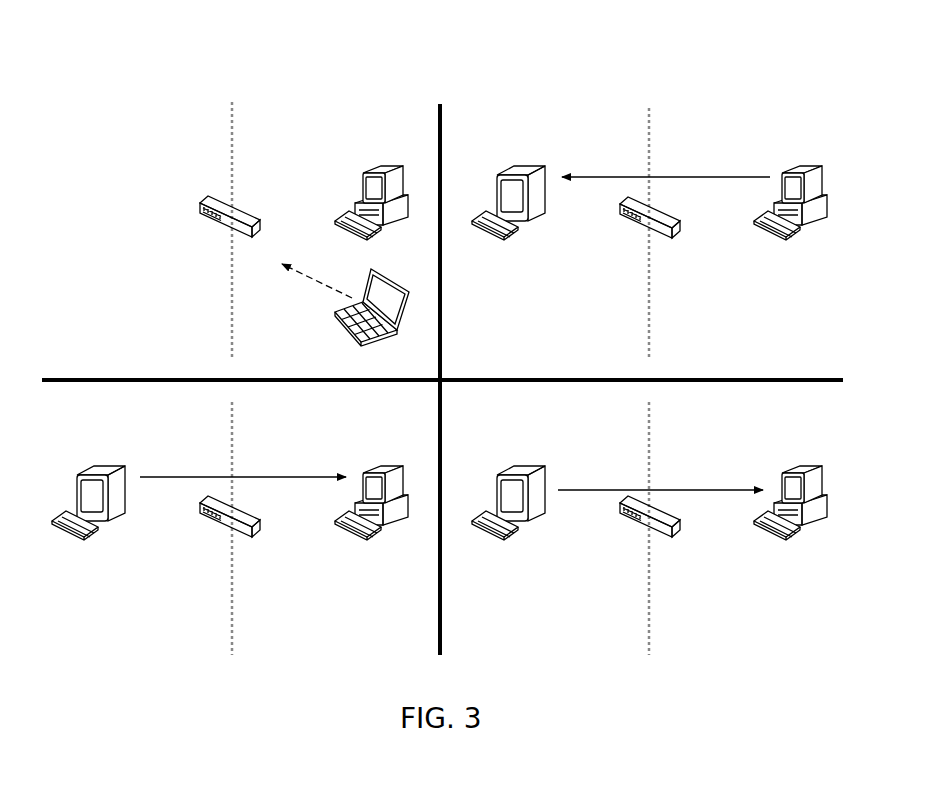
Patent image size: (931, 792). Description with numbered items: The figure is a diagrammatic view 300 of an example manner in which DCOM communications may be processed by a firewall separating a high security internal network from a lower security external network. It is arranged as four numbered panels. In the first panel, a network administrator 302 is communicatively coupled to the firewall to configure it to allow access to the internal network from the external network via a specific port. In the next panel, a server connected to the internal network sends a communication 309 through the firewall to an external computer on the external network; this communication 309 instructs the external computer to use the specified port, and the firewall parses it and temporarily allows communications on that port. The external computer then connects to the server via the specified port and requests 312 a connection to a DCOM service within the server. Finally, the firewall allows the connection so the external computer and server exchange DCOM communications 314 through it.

The diagrammatic view 300 is at (455, 58).
The network administrator 302 is at (355, 327).
The communication 309 is at (620, 177).
The request 312 is at (185, 477).
The DCOM communications 314 is at (570, 490).